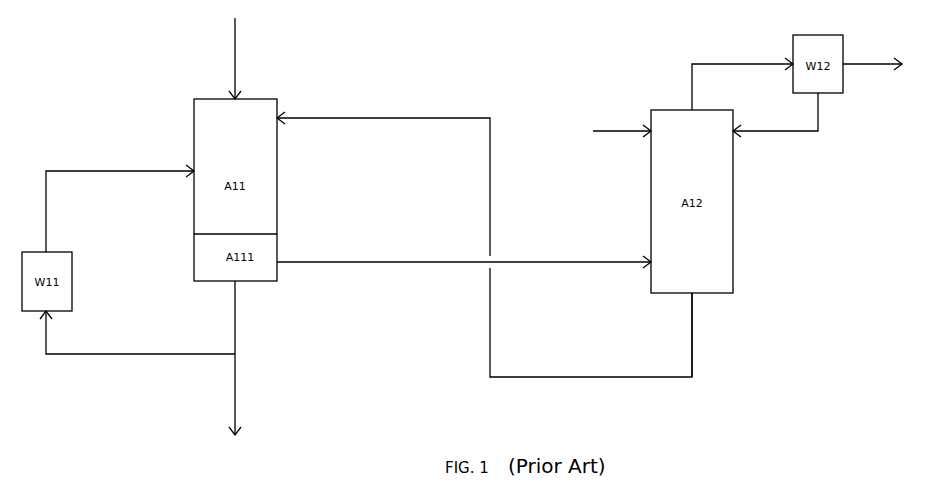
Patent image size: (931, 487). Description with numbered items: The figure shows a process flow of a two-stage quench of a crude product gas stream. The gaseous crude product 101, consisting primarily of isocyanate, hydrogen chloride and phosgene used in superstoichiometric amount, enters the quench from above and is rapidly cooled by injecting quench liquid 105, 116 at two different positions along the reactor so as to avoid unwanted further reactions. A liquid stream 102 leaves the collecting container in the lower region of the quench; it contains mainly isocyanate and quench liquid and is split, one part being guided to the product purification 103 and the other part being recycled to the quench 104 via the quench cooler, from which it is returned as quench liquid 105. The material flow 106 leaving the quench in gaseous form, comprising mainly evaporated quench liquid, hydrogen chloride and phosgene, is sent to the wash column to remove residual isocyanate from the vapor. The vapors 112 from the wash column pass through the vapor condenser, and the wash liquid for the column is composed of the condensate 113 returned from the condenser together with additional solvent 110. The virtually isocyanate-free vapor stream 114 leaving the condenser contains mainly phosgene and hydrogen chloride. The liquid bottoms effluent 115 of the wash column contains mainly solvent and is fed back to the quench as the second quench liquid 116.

The gaseous crude product 101 is at (249, 58).
The liquid stream 102 is at (252, 317).
The product purification 103 is at (249, 394).
The recycled quench liquid 104 is at (137, 332).
The quench liquid 105 is at (120, 200).
The material flow 106 is at (464, 255).
The additional solvent 110 is at (622, 124).
The vapors 112 is at (742, 78).
The condensate 113 is at (775, 115).
The isocyanate-free vapor stream 114 is at (872, 58).
The liquid bottoms effluent 115 is at (708, 335).
The quench liquid 116 is at (484, 234).